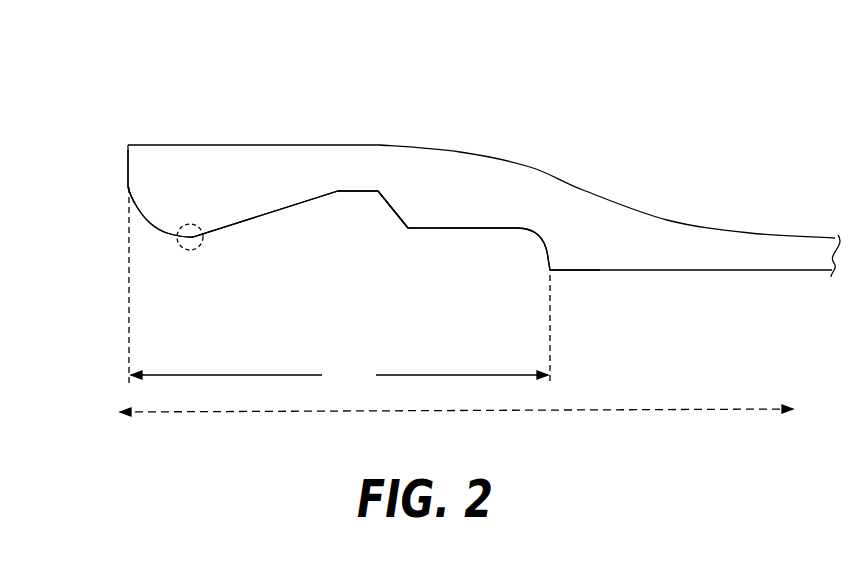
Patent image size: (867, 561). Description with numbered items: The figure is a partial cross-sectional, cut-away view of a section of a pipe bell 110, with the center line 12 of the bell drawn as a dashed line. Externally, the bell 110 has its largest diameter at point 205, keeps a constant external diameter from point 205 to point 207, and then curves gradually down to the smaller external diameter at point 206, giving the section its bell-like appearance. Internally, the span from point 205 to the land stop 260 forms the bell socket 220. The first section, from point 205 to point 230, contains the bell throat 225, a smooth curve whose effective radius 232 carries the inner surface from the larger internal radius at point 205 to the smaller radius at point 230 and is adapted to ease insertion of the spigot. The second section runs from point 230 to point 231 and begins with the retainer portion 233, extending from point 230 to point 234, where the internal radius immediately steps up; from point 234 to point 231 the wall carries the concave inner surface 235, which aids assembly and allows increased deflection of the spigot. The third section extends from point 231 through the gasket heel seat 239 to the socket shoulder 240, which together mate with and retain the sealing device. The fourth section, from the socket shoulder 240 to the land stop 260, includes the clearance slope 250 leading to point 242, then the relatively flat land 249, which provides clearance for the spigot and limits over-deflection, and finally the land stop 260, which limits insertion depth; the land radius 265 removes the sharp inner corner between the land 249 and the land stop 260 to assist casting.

The bell 110 is at (279, 86).
The point 205 is at (128, 145).
The point 206 is at (830, 238).
The point 207 is at (432, 145).
The bell throat 225 is at (131, 206).
The effective radius 232 is at (150, 212).
The retainer portion 233 is at (178, 242).
The point 234 is at (200, 237).
The point 230 is at (182, 245).
The concave inner surface 235 is at (287, 204).
The point 231 is at (338, 192).
The gasket heel seat 239 is at (378, 192).
The socket shoulder 240 is at (378, 196).
The clearance slope 250 is at (399, 216).
The point 242 is at (408, 230).
The land 249 is at (500, 228).
The land radius 265 is at (538, 240).
The land stop 260 is at (548, 262).
The bell socket 220 is at (339, 287).
The center line 12 is at (208, 415).